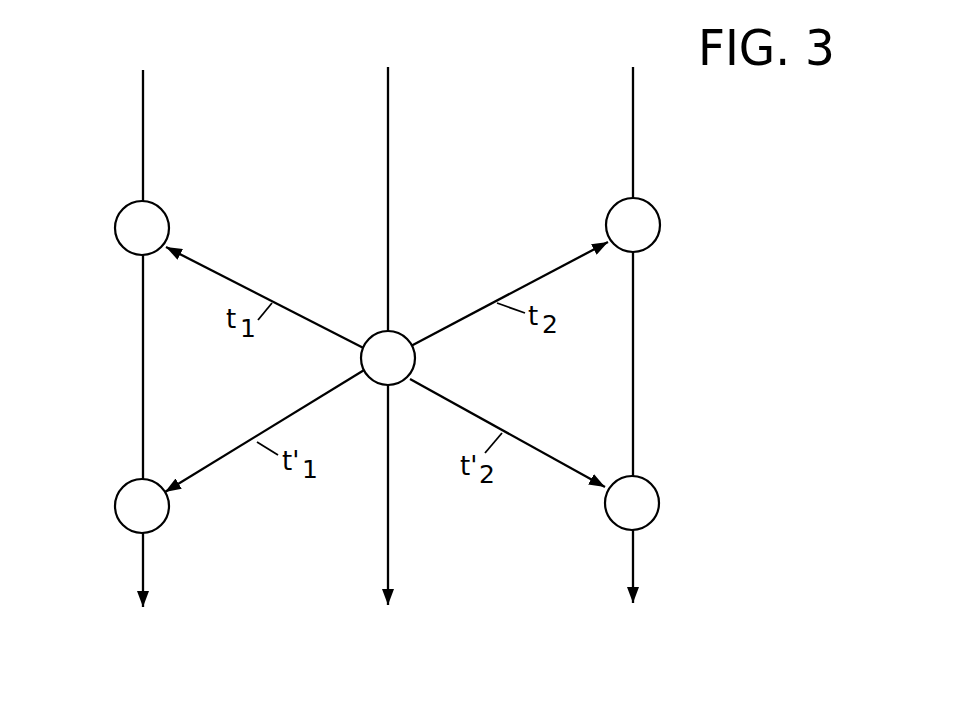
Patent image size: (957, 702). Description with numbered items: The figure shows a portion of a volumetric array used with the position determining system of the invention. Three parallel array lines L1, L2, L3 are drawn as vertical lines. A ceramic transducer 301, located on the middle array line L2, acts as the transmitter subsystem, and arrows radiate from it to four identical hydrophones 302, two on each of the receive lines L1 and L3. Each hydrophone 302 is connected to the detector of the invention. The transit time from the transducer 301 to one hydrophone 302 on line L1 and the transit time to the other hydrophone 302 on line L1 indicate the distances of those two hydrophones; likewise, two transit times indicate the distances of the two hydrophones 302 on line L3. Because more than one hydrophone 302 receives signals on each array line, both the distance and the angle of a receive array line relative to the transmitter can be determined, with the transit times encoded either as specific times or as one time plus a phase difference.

The ceramic transducer 301 is at (415, 360).
The hydrophones 302 is at (118, 213).
The array line L1 is at (147, 359).
The array line L2 is at (388, 358).
The array line L3 is at (630, 358).